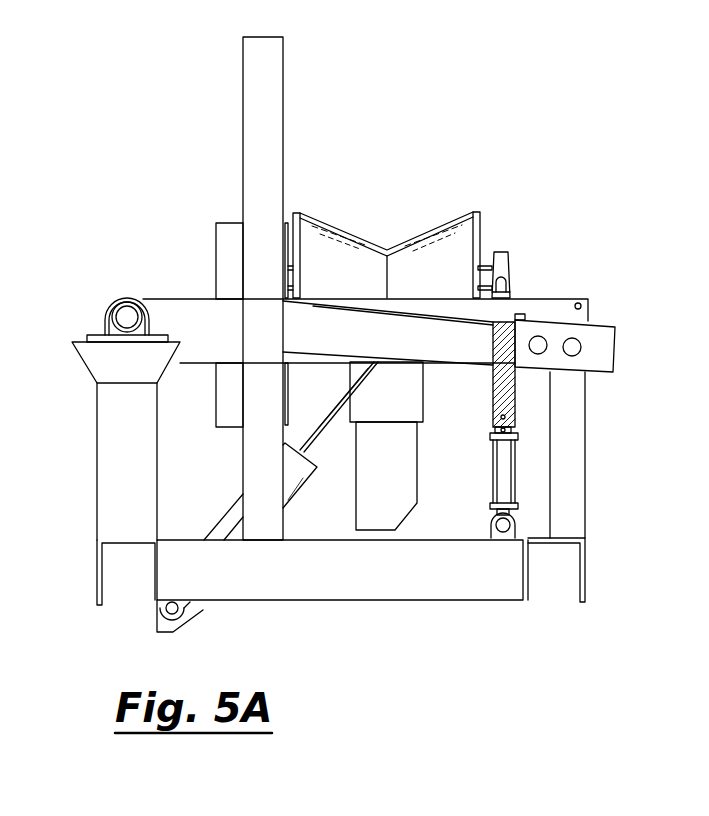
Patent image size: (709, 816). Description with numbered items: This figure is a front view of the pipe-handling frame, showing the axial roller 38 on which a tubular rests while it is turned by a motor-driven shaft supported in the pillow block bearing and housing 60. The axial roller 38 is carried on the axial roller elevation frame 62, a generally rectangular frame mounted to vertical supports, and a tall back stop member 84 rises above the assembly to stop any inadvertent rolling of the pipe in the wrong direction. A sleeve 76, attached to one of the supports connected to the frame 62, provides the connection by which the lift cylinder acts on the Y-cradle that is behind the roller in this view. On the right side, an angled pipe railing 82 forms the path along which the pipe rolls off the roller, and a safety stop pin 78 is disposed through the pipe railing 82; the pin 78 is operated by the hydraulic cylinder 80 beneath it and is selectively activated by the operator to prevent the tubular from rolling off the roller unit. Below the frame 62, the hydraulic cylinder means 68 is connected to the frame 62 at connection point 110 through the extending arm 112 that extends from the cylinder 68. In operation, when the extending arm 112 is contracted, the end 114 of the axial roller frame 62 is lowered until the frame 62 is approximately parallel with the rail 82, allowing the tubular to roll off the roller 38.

The axial roller 38 is at (335, 242).
The pillow block bearing and housing 60 is at (117, 296).
The axial roller elevation frame 62 is at (540, 306).
The hydraulic cylinder means 68 is at (293, 490).
The sleeve 76 is at (415, 415).
The safety stop pin 78 is at (511, 389).
The hydraulic cylinder 80 is at (503, 478).
The pipe railing 82 is at (602, 345).
The back stop member 84 is at (267, 95).
The connection point 110 is at (408, 410).
The extending arm 112 is at (325, 433).
The end of the axial roller frame 114 is at (581, 304).